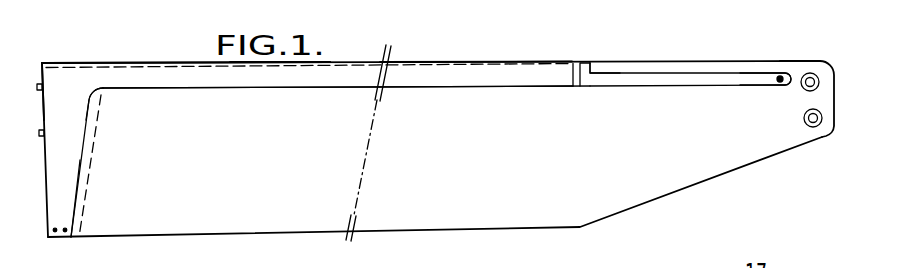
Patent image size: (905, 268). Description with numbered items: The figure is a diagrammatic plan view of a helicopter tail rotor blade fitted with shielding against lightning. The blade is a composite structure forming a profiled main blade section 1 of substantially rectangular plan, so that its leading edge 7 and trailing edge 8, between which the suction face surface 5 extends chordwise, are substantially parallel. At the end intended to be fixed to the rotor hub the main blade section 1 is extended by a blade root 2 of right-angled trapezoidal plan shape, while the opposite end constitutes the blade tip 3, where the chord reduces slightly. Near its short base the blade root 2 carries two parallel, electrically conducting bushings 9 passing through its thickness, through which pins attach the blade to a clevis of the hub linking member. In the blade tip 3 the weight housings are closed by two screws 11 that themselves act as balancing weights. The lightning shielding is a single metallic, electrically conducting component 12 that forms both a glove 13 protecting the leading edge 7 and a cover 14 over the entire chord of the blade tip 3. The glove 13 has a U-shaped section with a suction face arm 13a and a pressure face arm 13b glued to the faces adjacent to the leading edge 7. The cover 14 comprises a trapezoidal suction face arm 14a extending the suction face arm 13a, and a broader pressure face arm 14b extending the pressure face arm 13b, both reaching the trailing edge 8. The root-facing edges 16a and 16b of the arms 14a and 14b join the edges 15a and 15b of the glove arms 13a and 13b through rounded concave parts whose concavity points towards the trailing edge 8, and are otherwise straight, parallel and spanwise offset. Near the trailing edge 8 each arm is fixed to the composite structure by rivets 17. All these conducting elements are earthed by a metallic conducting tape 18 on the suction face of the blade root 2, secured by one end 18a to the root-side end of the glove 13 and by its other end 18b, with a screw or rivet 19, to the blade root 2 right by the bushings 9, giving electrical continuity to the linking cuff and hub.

The main blade section 1 is at (531, 59).
The blade root 2 is at (729, 57).
The blade tip 3 is at (80, 60).
The suction face surface 5 is at (488, 120).
The leading edge 7 is at (172, 62).
The trailing edge 8 is at (443, 231).
The bushings 9 is at (811, 127).
The screws 11 is at (38, 118).
The metallic component 12 is at (40, 59).
The glove 13 is at (414, 59).
The suction face arm 13a is at (251, 77).
The pressure face arm 13b is at (577, 87).
The cover 14 is at (42, 189).
The suction face arm 14a is at (72, 150).
The pressure face arm 14b is at (84, 173).
The edge 15a is at (320, 89).
The edge 15b is at (415, 89).
The edge 16a is at (75, 207).
The edge 16b is at (93, 122).
The rivets 17 is at (65, 232).
The conducting tape 18 is at (665, 80).
The end 18a is at (583, 70).
The end 18b is at (757, 76).
The screw or rivet 19 is at (784, 76).